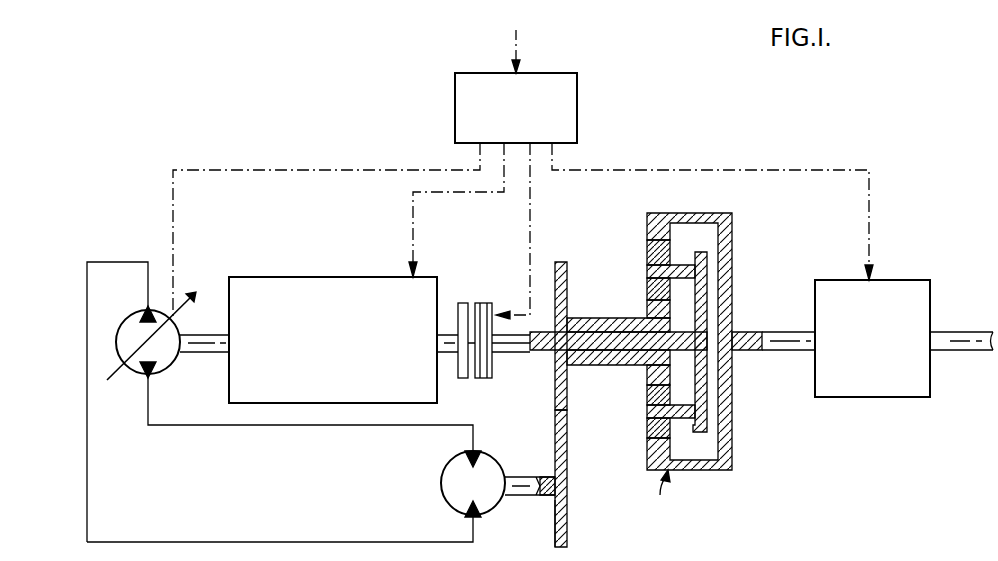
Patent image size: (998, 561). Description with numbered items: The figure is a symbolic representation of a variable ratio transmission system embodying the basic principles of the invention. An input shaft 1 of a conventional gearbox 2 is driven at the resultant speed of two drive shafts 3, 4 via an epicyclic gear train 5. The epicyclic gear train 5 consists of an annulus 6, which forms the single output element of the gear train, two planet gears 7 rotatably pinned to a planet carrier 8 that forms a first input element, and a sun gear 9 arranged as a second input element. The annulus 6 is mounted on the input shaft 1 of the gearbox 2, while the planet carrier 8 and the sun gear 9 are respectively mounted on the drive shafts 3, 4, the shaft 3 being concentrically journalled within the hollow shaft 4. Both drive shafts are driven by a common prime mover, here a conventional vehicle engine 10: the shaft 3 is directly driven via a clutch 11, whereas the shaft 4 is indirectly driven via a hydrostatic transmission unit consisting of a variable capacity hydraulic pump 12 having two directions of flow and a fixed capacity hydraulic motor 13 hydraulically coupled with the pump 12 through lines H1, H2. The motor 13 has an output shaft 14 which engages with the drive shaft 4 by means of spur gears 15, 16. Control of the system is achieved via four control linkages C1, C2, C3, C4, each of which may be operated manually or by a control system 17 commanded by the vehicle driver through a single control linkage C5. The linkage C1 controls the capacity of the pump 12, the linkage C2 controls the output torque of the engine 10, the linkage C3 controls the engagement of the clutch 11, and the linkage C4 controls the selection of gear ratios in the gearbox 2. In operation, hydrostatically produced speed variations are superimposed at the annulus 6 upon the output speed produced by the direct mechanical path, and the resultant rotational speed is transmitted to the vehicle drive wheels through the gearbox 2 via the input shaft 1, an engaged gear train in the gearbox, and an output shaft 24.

The input shaft 1 is at (790, 352).
The gearbox 2 is at (880, 351).
The drive shaft 3 is at (510, 352).
The drive shaft 4 is at (598, 318).
The epicyclic gear train 5 is at (655, 493).
The annulus 6 is at (700, 470).
The planet gears 7 is at (650, 252).
The planet carrier 8 is at (704, 376).
The sun gear 9 is at (652, 310).
The vehicle engine 10 is at (340, 351).
The clutch 11 is at (480, 303).
The variable capacity hydraulic pump 12 is at (172, 366).
The fixed capacity hydraulic motor 13 is at (495, 506).
The output shaft 14 is at (520, 483).
The spur gear 15 is at (567, 514).
The spur gear 16 is at (567, 398).
The control system 17 is at (527, 112).
The output shaft 24 is at (953, 352).
The control linkage C1 is at (236, 170).
The control linkage C2 is at (413, 236).
The control linkage C3 is at (530, 218).
The control linkage C4 is at (800, 170).
The control linkage C5 is at (514, 39).
The hydraulic line H1 is at (297, 425).
The hydraulic line H2 is at (298, 542).